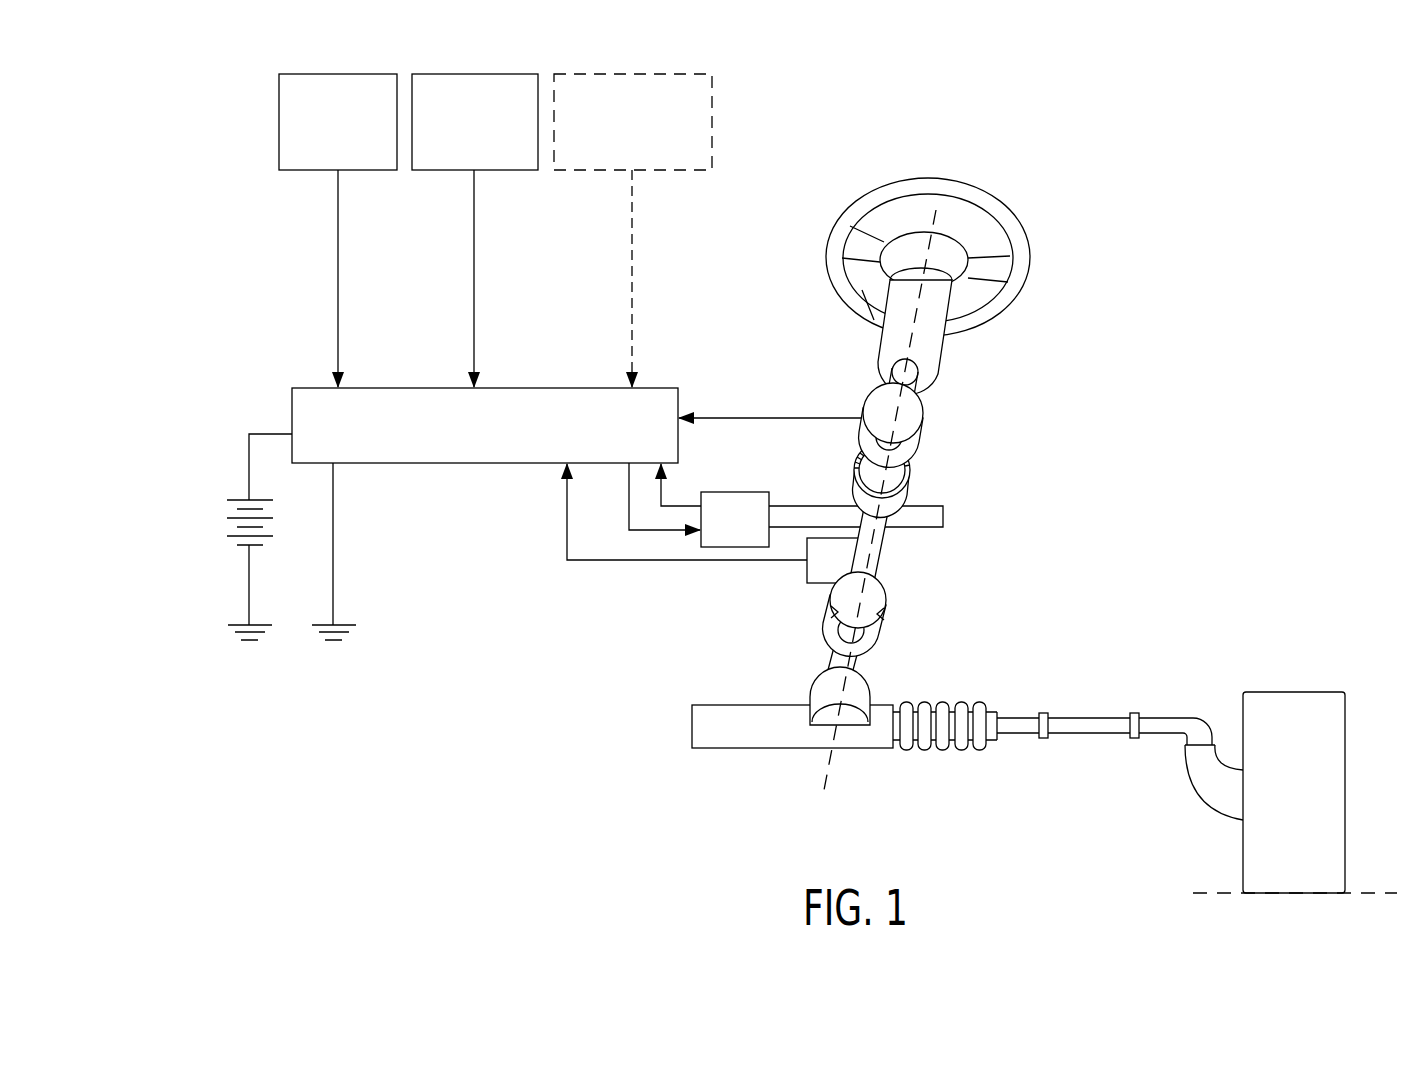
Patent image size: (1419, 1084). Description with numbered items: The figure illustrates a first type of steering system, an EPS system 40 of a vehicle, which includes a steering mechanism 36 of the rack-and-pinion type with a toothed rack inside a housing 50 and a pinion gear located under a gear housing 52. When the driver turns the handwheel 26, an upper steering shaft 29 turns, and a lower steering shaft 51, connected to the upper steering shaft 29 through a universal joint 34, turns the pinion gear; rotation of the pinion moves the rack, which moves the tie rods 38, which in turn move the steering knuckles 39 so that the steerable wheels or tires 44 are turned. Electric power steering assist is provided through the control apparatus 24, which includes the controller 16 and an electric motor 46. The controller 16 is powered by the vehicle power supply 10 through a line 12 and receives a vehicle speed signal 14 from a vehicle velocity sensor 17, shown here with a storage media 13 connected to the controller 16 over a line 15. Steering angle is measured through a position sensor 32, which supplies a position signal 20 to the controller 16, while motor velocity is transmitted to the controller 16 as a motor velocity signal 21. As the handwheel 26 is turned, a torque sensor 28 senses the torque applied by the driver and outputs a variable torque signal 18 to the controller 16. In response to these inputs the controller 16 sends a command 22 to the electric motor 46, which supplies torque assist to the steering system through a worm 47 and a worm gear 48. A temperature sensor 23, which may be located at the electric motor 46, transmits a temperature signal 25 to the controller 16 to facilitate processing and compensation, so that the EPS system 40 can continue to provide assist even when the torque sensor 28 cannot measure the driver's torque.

The vehicle power supply 10 is at (230, 518).
The line 12 is at (268, 433).
The storage media 13 is at (302, 172).
The vehicle speed signal 14 is at (474, 302).
The storage media connection line 15 is at (336, 303).
The controller 16 is at (468, 464).
The vehicle velocity sensor 17 is at (426, 172).
The torque signal 18 is at (785, 418).
The position signal 20 is at (686, 562).
The motor velocity signal 21 is at (660, 492).
The command 22 is at (645, 532).
The temperature sensor 23 is at (580, 172).
The control apparatus 24 is at (972, 468).
The temperature signal 25 is at (632, 302).
The handwheel 26 is at (985, 205).
The torque sensor 28 is at (918, 420).
The upper steering shaft 29 is at (920, 375).
The position sensor 32 is at (806, 572).
The universal joint 34 is at (882, 607).
The steering mechanism 36 is at (968, 700).
The tie rod 38 is at (1085, 728).
The steering knuckle 39 is at (1210, 780).
The EPS system 40 is at (1044, 660).
The steerable wheel 44 is at (1282, 705).
The electric motor 46 is at (748, 492).
The worm 47 is at (932, 520).
The worm gear 48 is at (895, 478).
The housing 50 is at (733, 738).
The lower steering shaft 51 is at (862, 660).
The gear housing 52 is at (818, 688).